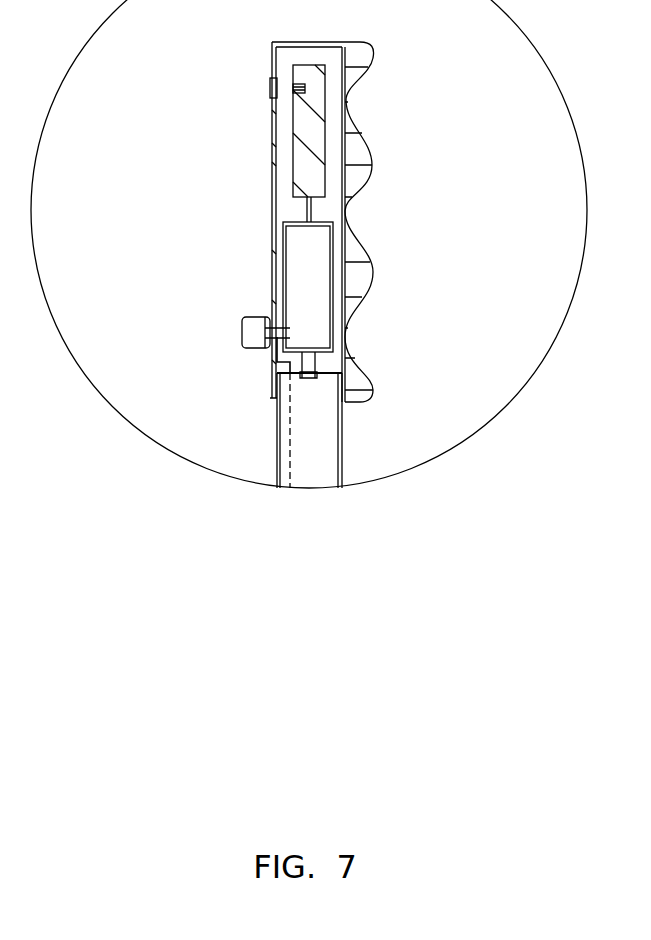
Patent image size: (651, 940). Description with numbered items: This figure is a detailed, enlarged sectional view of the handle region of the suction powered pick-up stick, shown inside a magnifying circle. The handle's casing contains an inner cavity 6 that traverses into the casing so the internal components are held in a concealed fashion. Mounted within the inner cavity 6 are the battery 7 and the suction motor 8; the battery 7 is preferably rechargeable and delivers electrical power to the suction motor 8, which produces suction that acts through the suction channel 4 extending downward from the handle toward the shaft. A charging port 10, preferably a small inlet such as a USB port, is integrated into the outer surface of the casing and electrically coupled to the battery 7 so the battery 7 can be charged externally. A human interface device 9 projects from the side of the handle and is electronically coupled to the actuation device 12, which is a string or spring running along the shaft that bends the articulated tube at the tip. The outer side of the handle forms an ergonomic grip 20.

The suction channel 4 is at (320, 468).
The inner cavity 6 is at (323, 212).
The battery 7 is at (316, 117).
The suction motor 8 is at (315, 305).
The human interface device 9 is at (239, 336).
The charging port 10 is at (270, 88).
The actuation device 12 is at (290, 465).
The ergonomic grip 20 is at (358, 273).